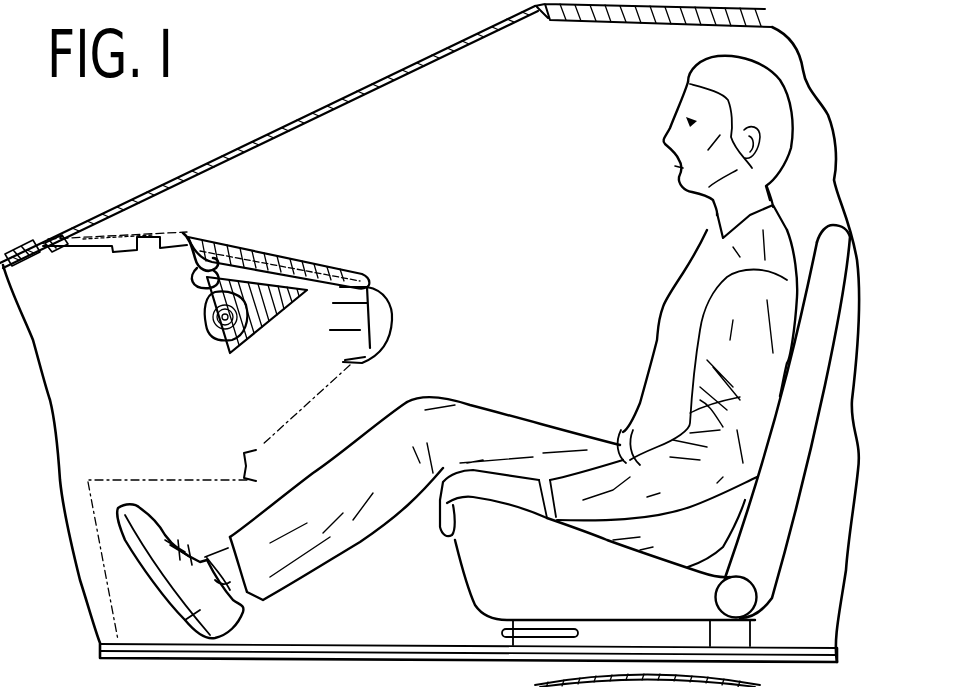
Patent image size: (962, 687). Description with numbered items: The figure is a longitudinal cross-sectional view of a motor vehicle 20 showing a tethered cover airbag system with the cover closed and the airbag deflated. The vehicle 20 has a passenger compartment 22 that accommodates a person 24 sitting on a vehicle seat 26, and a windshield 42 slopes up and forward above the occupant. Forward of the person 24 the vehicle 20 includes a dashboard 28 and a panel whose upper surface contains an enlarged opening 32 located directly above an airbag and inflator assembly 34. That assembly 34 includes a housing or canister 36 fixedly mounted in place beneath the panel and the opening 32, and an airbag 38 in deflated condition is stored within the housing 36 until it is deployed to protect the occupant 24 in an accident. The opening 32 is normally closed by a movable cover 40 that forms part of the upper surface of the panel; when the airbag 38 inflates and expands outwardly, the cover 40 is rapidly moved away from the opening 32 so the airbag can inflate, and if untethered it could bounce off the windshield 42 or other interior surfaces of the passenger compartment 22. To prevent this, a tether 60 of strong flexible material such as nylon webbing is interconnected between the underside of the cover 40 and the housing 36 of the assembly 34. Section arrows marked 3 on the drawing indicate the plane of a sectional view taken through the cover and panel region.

The motor vehicle 20 is at (241, 666).
The passenger compartment 22 is at (528, 158).
The person 24 is at (681, 273).
The vehicle seat 26 is at (820, 470).
The dashboard 28 is at (400, 311).
The section line for FIG. 3 is at (192, 250).
The opening 32 is at (214, 241).
The airbag and inflator assembly 34 is at (200, 343).
The housing 36 is at (200, 306).
The airbag 38 is at (287, 295).
The movable cover 40 is at (312, 250).
The windshield 42 is at (334, 100).
The tether 60 is at (198, 283).